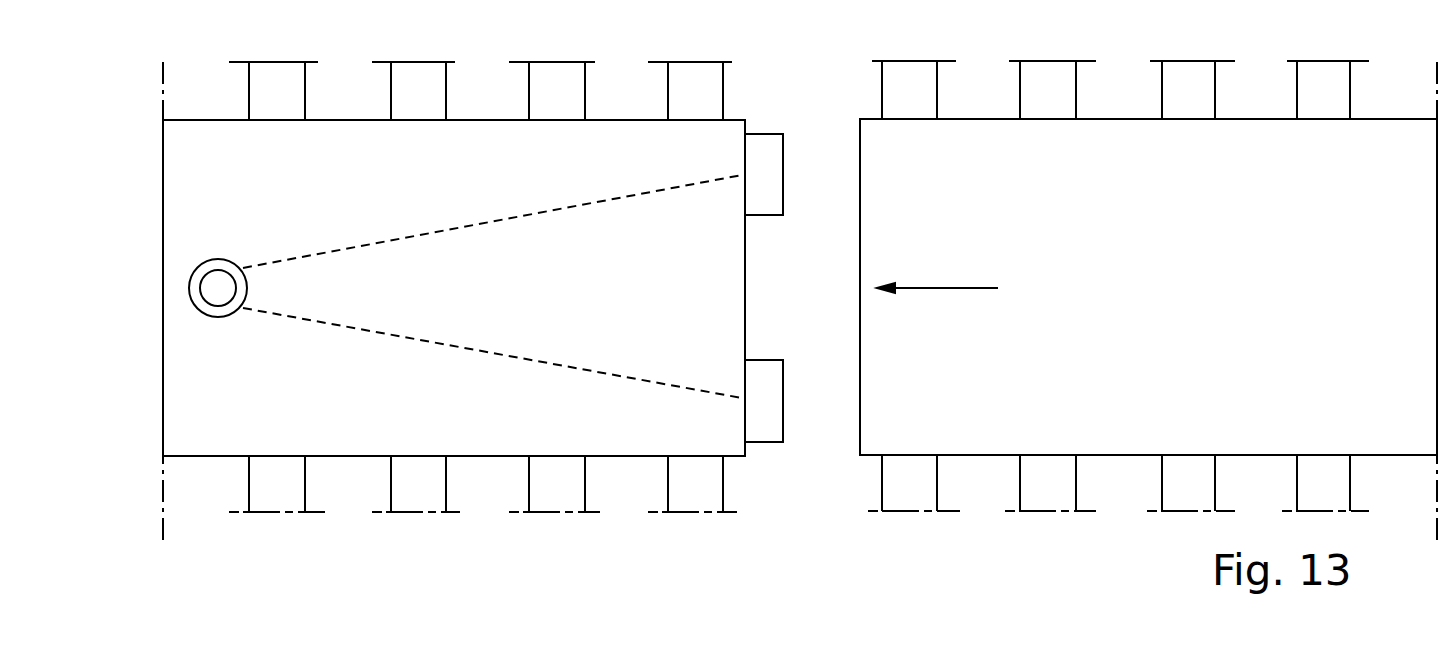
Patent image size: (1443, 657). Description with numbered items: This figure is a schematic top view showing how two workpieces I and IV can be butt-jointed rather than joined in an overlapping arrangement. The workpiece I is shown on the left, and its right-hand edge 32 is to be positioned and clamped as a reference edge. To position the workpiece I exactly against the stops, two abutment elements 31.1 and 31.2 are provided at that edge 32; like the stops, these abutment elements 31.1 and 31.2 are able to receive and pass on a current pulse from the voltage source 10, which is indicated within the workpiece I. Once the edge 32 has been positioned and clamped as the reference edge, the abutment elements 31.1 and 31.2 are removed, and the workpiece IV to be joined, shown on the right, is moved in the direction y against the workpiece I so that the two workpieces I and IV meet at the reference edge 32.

The workpiece I is at (334, 143).
The workpiece IV is at (1125, 157).
The voltage source 10 is at (213, 288).
The abutment element 31.1 is at (757, 427).
The abutment element 31.2 is at (756, 170).
The edge 32 is at (745, 317).